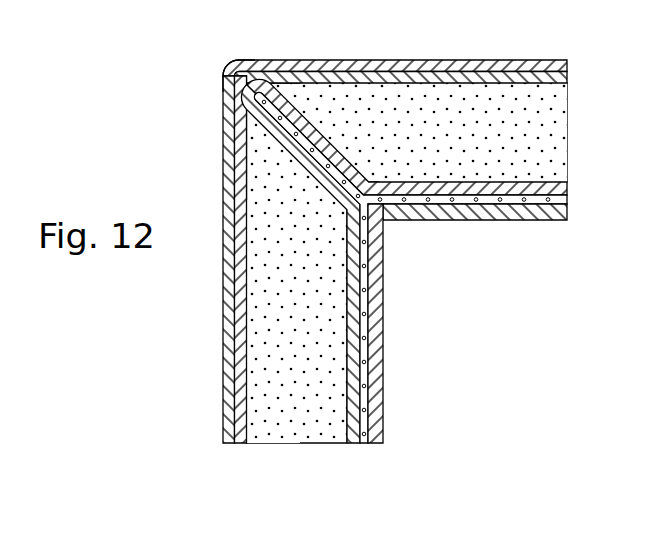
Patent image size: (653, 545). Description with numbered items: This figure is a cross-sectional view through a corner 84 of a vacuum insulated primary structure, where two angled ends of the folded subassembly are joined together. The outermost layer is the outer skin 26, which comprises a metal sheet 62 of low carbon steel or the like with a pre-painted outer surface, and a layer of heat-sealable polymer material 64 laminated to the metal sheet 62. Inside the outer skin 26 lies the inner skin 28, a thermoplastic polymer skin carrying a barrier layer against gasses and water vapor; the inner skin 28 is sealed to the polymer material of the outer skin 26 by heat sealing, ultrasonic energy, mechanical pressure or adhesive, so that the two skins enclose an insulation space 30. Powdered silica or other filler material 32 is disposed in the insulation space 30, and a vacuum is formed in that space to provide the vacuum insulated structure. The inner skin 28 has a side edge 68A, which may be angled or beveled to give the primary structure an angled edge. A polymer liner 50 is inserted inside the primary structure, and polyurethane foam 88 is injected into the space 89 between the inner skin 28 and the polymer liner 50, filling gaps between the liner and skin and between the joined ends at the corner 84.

The corner 84 is at (236, 68).
The metal sheet 62 is at (512, 60).
The heat-sealable polymer material 64 is at (567, 83).
The inner skin 28 is at (567, 177).
The side edge 68A is at (518, 227).
The outer skin 26 is at (223, 382).
The filler material 32 is at (280, 427).
The insulation space 30 is at (302, 430).
The polyurethane foam 88 is at (357, 445).
The space 89 is at (363, 445).
The polymer liner 50 is at (383, 355).